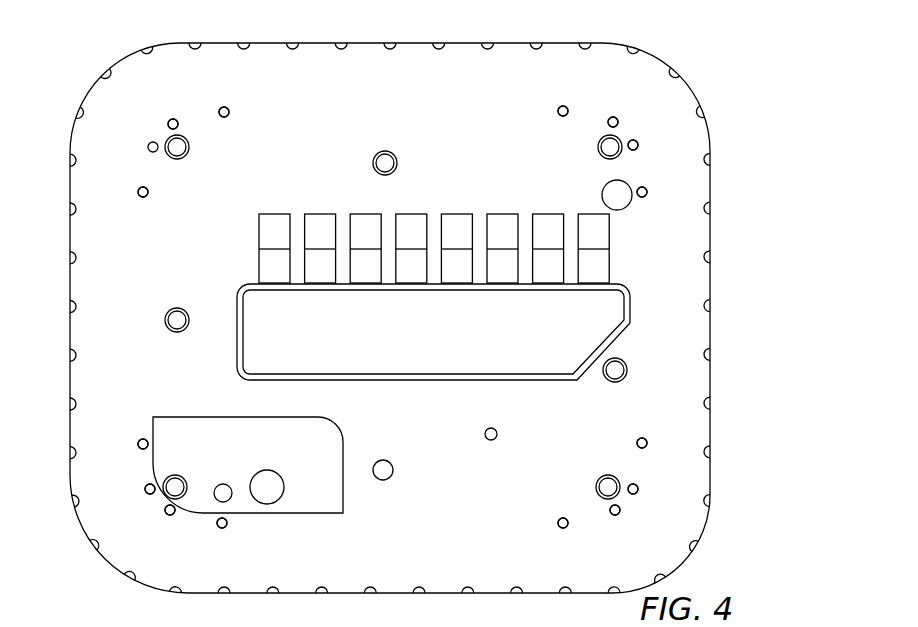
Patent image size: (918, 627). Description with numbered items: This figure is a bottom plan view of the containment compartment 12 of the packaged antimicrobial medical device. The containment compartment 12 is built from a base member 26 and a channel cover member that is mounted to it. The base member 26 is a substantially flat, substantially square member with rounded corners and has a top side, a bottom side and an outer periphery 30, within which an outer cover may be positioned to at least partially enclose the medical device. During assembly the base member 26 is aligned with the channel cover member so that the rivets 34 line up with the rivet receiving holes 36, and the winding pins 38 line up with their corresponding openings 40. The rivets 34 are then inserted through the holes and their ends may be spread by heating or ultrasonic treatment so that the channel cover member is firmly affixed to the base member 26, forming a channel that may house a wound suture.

The containment compartment 12 is at (672, 80).
The base member 26 is at (694, 237).
The outer periphery 30 is at (713, 320).
The rivets 34 is at (183, 147).
The rivet receiving holes 36 is at (183, 157).
The winding pins 38 is at (219, 110).
The openings 40 is at (167, 124).